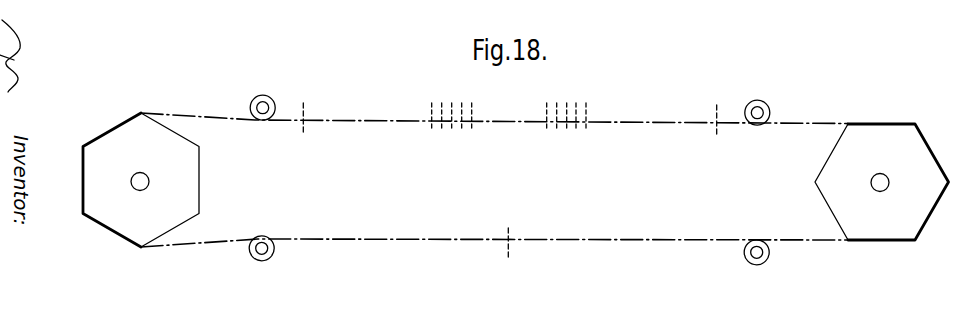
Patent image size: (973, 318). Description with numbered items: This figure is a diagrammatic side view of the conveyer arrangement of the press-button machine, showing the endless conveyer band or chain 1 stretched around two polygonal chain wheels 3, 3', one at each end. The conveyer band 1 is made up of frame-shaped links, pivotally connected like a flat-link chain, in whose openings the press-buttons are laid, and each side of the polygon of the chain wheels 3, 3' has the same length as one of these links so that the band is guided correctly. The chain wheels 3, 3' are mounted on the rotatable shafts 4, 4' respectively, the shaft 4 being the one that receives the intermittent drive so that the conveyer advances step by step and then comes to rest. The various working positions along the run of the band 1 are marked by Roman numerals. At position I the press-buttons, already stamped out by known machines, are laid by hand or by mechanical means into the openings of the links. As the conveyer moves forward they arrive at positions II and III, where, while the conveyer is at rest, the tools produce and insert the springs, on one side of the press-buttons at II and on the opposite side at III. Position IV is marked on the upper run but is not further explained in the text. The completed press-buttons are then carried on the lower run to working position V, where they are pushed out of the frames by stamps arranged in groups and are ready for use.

The conveyer band 1 is at (795, 123).
The chain wheel 3 is at (882, 182).
The chain wheel 3' is at (150, 180).
The rotatable shaft 4 is at (889, 181).
The rotatable shaft 4' is at (150, 180).
The working position I is at (303, 109).
The working position II is at (452, 104).
The working position III is at (566, 104).
The section line IV is at (714, 108).
The working position V is at (508, 231).